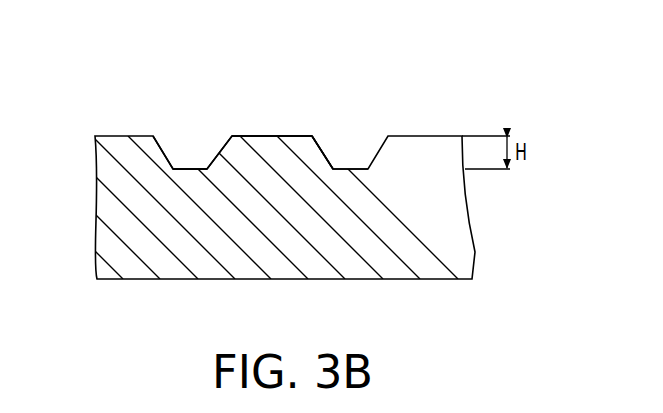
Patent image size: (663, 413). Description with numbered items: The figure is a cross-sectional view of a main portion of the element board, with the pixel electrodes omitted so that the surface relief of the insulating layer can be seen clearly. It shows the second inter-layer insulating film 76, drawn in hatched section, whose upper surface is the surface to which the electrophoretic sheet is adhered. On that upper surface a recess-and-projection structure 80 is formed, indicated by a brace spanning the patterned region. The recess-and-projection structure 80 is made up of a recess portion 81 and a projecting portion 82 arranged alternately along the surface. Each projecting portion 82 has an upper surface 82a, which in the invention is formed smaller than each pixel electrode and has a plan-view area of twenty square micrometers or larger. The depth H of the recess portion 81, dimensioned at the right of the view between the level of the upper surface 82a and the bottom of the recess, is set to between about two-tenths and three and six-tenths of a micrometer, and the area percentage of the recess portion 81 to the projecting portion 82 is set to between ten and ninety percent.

The second inter-layer insulating film 76 is at (450, 220).
The recess-and-projection structure 80 is at (292, 48).
The recess portion 81 is at (192, 169).
The projecting portion 82 is at (267, 135).
The upper surface 82a is at (302, 135).